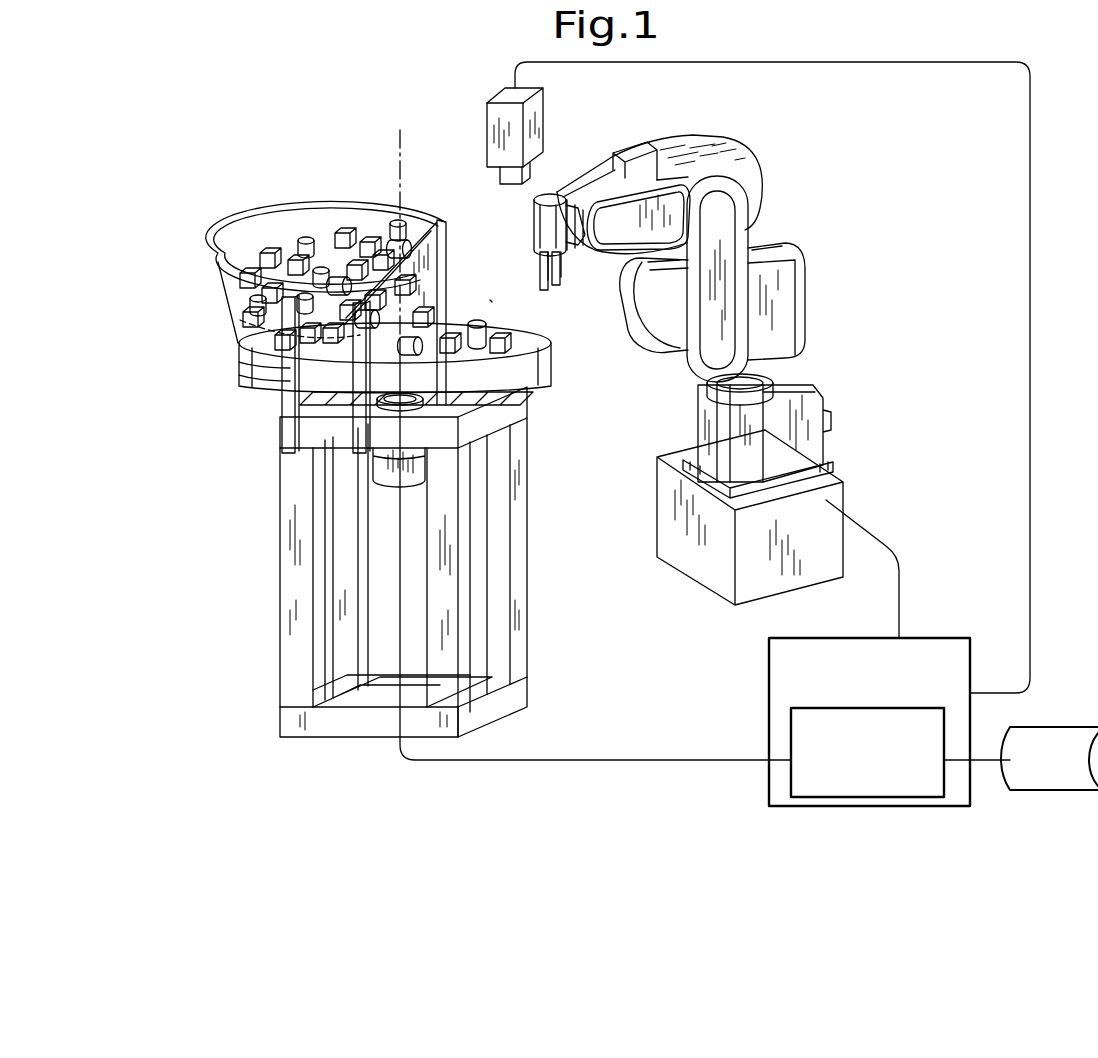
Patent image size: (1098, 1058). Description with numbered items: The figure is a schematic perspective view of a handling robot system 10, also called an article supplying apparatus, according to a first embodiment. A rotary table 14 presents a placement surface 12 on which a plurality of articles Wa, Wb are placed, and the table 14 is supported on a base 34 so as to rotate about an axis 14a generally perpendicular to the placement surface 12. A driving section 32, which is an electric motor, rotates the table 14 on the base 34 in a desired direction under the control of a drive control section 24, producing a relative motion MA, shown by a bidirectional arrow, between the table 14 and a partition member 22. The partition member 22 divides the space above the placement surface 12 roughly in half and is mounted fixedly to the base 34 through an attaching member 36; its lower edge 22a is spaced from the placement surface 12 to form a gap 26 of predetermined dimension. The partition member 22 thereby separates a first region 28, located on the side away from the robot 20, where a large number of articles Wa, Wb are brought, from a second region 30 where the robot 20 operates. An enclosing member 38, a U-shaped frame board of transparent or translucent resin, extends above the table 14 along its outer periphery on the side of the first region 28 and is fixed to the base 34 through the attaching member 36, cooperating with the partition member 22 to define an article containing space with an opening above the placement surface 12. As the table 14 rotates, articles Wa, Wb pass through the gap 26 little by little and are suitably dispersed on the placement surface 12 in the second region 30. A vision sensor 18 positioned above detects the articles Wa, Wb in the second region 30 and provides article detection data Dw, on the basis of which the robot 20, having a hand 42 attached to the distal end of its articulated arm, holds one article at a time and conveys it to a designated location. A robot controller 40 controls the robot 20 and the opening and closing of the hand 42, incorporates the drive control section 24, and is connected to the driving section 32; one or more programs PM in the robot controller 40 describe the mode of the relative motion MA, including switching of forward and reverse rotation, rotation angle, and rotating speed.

The handling robot system 10 is at (208, 702).
The placement surface 12 is at (530, 342).
The table 14 is at (544, 386).
The axis 14a is at (400, 140).
The vision sensor 18 is at (497, 138).
The robot 20 is at (815, 318).
The partition member 22 is at (243, 354).
The lower edge 22a is at (300, 388).
The drive control section 24 is at (791, 770).
The gap 26 is at (416, 329).
The first region 28 is at (250, 254).
The second region 30 is at (498, 274).
The driving section 32 is at (383, 460).
The base 34 is at (295, 540).
The attaching member 36 is at (367, 420).
The enclosing member 38 is at (230, 316).
The robot controller 40 is at (948, 638).
The hand 42 is at (560, 262).
The article Wa is at (313, 242).
The article Wb is at (340, 233).
The relative motion MA is at (487, 380).
The article detection data Dw is at (888, 72).
The program PM is at (1021, 758).